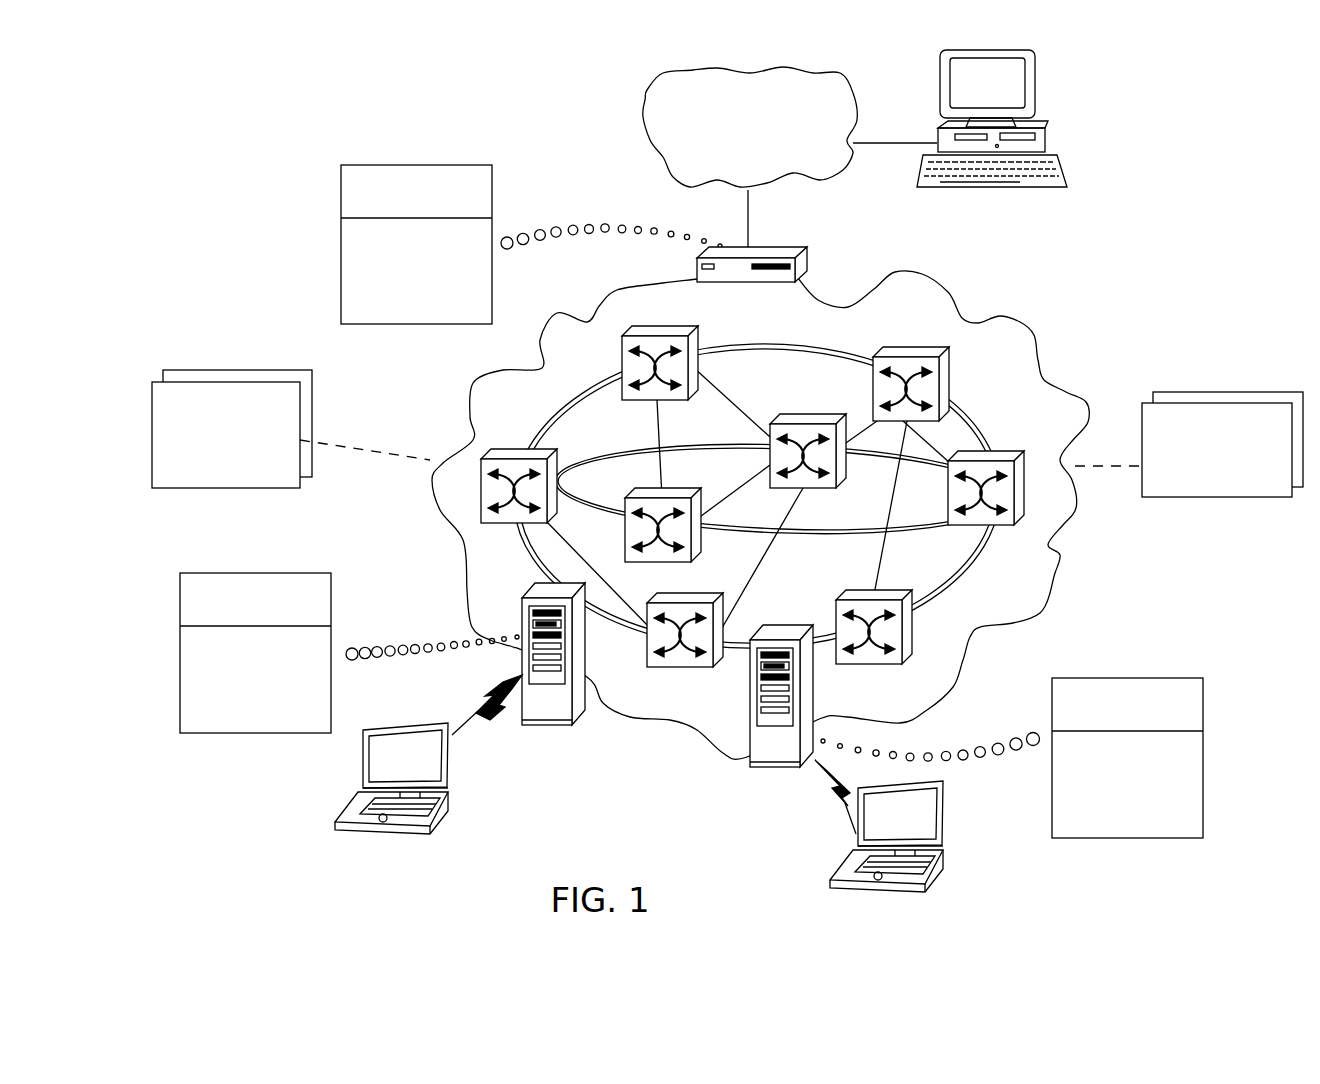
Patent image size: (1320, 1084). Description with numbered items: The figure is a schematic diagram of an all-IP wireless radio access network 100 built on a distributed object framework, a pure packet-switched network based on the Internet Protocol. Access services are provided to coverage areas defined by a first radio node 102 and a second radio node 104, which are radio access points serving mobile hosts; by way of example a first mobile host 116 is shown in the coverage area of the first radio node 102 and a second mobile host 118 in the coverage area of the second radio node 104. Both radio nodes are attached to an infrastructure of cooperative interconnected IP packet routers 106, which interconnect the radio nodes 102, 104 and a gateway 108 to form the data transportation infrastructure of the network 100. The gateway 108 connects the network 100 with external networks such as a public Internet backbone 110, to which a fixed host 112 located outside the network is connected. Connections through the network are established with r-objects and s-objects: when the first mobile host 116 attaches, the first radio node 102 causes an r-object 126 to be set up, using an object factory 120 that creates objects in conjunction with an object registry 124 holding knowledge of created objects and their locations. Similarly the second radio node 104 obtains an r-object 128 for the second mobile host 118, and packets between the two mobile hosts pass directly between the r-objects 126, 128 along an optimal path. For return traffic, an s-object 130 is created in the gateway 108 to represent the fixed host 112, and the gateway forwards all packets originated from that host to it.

The radio access network 100 is at (1043, 338).
The first radio node 102 is at (587, 712).
The second radio node 104 is at (750, 770).
The IP packet routers 106 is at (690, 336).
The gateway 108 is at (796, 265).
The Internet backbone 110 is at (732, 158).
The fixed host 112 is at (1038, 80).
The first mobile host 116 is at (436, 823).
The second mobile host 118 is at (932, 883).
The object factory 120 is at (208, 468).
The object registry 124 is at (1199, 490).
The r-object 126 is at (180, 683).
The r-object 128 is at (1203, 775).
The s-object 130 is at (341, 273).